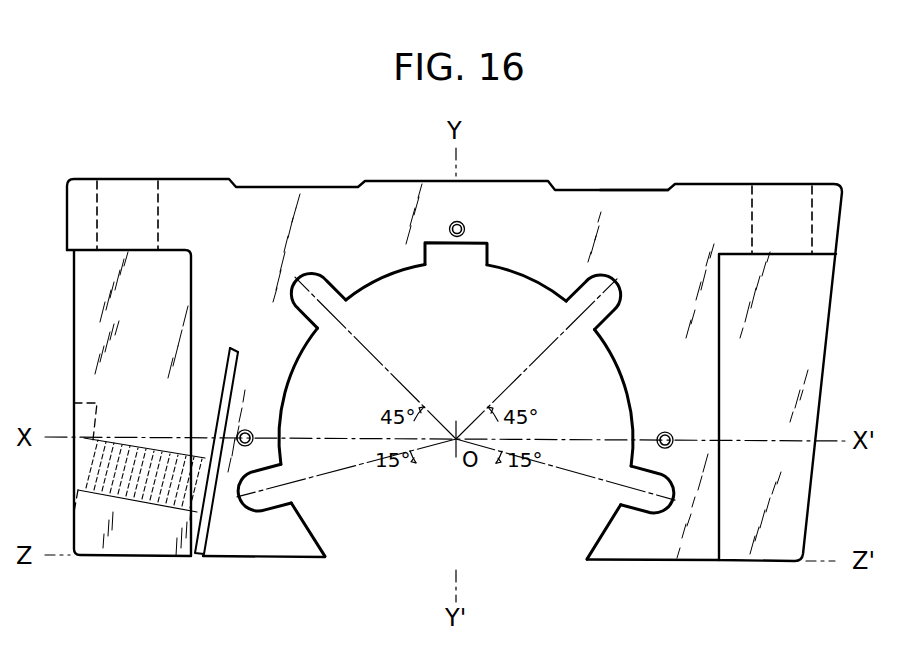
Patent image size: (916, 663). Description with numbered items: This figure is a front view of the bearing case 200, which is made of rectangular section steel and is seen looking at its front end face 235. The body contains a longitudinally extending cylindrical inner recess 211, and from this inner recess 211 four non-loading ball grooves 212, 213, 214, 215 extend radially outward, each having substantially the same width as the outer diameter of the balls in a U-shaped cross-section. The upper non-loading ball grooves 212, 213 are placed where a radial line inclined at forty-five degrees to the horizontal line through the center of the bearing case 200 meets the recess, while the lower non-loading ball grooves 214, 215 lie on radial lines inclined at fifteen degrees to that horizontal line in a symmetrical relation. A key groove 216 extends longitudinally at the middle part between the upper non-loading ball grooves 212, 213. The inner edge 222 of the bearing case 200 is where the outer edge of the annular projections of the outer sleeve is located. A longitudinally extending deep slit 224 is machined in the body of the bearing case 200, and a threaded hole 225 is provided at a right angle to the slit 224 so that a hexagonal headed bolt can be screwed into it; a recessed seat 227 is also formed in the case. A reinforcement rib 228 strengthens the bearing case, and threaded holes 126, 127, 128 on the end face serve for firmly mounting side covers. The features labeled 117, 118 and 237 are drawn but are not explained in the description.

The bearing case 200 is at (709, 182).
The first mounting hole 117 is at (158, 179).
The second mounting hole 118 is at (812, 199).
The front end face 235 is at (626, 191).
The threaded hole 126 is at (457, 220).
The threaded hole 127 is at (245, 430).
The threaded hole 128 is at (666, 430).
The cylindrical inner recess 211 is at (520, 276).
The upper non-loading ball groove 212 is at (321, 281).
The upper non-loading ball groove 213 is at (601, 282).
The lower non-loading ball groove 214 is at (258, 507).
The lower non-loading ball groove 215 is at (660, 478).
The key groove 216 is at (453, 248).
The inner edge 222 is at (616, 364).
The slit 224 is at (198, 558).
The threaded hole 225 is at (115, 498).
The recessed seat 227 is at (80, 498).
The reinforcement rib 228 is at (90, 328).
The rod tip 237 is at (234, 345).